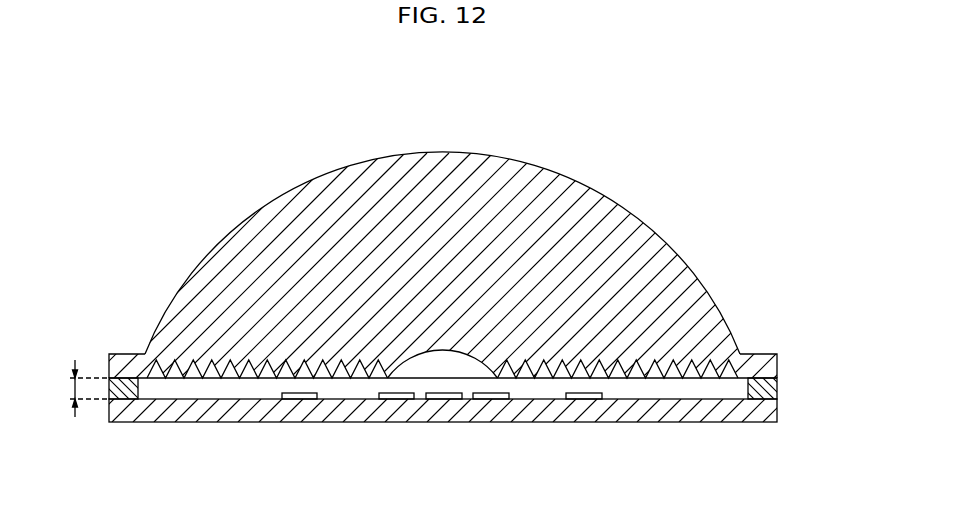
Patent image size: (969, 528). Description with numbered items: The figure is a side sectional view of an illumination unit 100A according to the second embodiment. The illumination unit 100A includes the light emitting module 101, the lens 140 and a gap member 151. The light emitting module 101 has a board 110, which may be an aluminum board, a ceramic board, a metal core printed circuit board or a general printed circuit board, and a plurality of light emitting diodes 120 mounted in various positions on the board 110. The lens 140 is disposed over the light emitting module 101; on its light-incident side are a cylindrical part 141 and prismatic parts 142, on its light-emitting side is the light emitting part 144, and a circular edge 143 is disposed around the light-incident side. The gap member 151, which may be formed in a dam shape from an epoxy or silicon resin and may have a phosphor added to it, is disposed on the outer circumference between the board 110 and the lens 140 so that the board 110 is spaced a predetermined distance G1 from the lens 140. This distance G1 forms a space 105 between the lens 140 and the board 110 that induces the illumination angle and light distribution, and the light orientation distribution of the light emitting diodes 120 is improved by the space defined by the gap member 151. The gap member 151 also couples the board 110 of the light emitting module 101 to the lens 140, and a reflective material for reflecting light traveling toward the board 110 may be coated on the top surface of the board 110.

The illumination unit 100A is at (198, 88).
The light emitting module 101 is at (468, 437).
The space 105 is at (545, 390).
The board 110 is at (303, 410).
The light emitting diodes 120 is at (490, 395).
The lens 140 is at (484, 246).
The cylindrical part 141 is at (424, 350).
The prismatic parts 142 is at (594, 376).
The edge 143 is at (763, 365).
The light emitting part 144 is at (705, 290).
The gap member 151 is at (767, 389).
The predetermined distance G1 is at (73, 388).